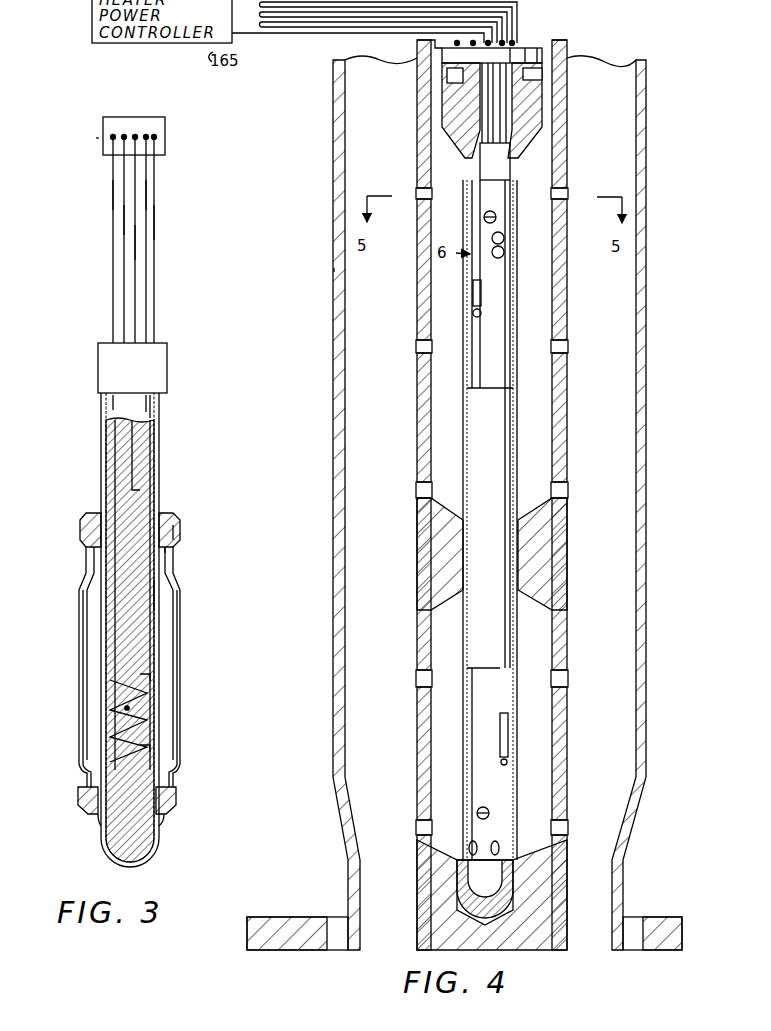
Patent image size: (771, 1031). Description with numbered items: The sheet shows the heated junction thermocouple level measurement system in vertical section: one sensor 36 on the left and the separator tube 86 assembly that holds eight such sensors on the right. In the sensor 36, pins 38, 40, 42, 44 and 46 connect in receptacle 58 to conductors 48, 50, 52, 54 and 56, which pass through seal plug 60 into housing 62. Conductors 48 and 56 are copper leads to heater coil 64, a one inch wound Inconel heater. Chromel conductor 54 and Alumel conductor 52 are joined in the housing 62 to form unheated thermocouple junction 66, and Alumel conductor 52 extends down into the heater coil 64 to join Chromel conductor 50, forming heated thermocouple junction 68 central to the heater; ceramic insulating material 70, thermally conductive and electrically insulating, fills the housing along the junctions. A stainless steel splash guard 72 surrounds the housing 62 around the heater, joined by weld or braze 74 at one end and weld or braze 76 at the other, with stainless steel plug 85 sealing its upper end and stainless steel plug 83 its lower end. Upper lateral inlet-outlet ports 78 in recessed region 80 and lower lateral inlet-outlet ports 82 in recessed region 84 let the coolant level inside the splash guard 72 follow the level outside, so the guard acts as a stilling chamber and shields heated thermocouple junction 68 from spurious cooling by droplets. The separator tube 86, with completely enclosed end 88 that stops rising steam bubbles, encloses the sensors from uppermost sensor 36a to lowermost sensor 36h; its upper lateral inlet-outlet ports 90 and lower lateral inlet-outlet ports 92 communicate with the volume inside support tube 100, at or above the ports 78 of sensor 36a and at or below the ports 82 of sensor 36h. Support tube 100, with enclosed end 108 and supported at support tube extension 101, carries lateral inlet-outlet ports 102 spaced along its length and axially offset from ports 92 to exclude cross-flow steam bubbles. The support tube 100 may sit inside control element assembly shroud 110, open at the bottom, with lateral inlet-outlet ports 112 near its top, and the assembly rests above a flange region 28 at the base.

In FIG. 4, the flange 28 is at (298, 915).
In FIG. 3, the sensor 36 is at (170, 407).
In FIG. 4, the uppermost sensor 36a is at (470, 305).
In FIG. 4, the lowermost sensor 36h is at (508, 736).
In FIG. 3, the pin 38 is at (113, 137).
In FIG. 3, the pin 40 is at (124, 137).
In FIG. 3, the pin 42 is at (135, 137).
In FIG. 3, the pin 44 is at (146, 137).
In FIG. 3, the pin 46 is at (154, 137).
In FIG. 3, the conductor 48 is at (113, 200).
In FIG. 3, the Chromel conductor 50 is at (124, 220).
In FIG. 3, the Alumel conductor 52 is at (135, 238).
In FIG. 3, the Chromel conductor 54 is at (147, 197).
In FIG. 3, the conductor 56 is at (154, 222).
In FIG. 3, the receptacle 58 is at (171, 144).
In FIG. 3, the seal plug 60 is at (167, 357).
In FIG. 3, the housing 62 is at (158, 465).
In FIG. 4, the housing 62 is at (497, 672).
In FIG. 3, the heater coil 64 is at (128, 708).
In FIG. 3, the unheated thermocouple junction 66 is at (160, 490).
In FIG. 3, the heated thermocouple junction 68 is at (131, 724).
In FIG. 3, the ceramic insulating material 70 is at (141, 684).
In FIG. 3, the splash guard 72 is at (178, 647).
In FIG. 3, the weld or braze 74 is at (101, 513).
In FIG. 3, the weld or braze 76 is at (98, 817).
In FIG. 3, the upper lateral inlet-outlet ports 78 is at (88, 553).
In FIG. 3, the recessed region 80 is at (178, 546).
In FIG. 3, the lower lateral inlet-outlet ports 82 is at (87, 774).
In FIG. 3, the stainless steel plug 83 is at (177, 803).
In FIG. 3, the recessed region 84 is at (82, 762).
In FIG. 3, the stainless steel plug 85 is at (178, 531).
In FIG. 4, the separator tube 86 is at (517, 421).
In FIG. 4, the end 88 is at (525, 883).
In FIG. 4, the upper lateral inlet-outlet ports 90 is at (504, 226).
In FIG. 4, the lower lateral inlet-outlet ports 92 is at (492, 821).
In FIG. 4, the support tube 100 is at (568, 321).
In FIG. 4, the support tube extension 101 is at (560, 543).
In FIG. 4, the lateral inlet-outlet ports 102 is at (417, 193).
In FIG. 4, the end 108 is at (552, 906).
In FIG. 4, the control element assembly shroud 110 is at (334, 268).
In FIG. 4, the lateral inlet-outlet ports 112 is at (346, 110).